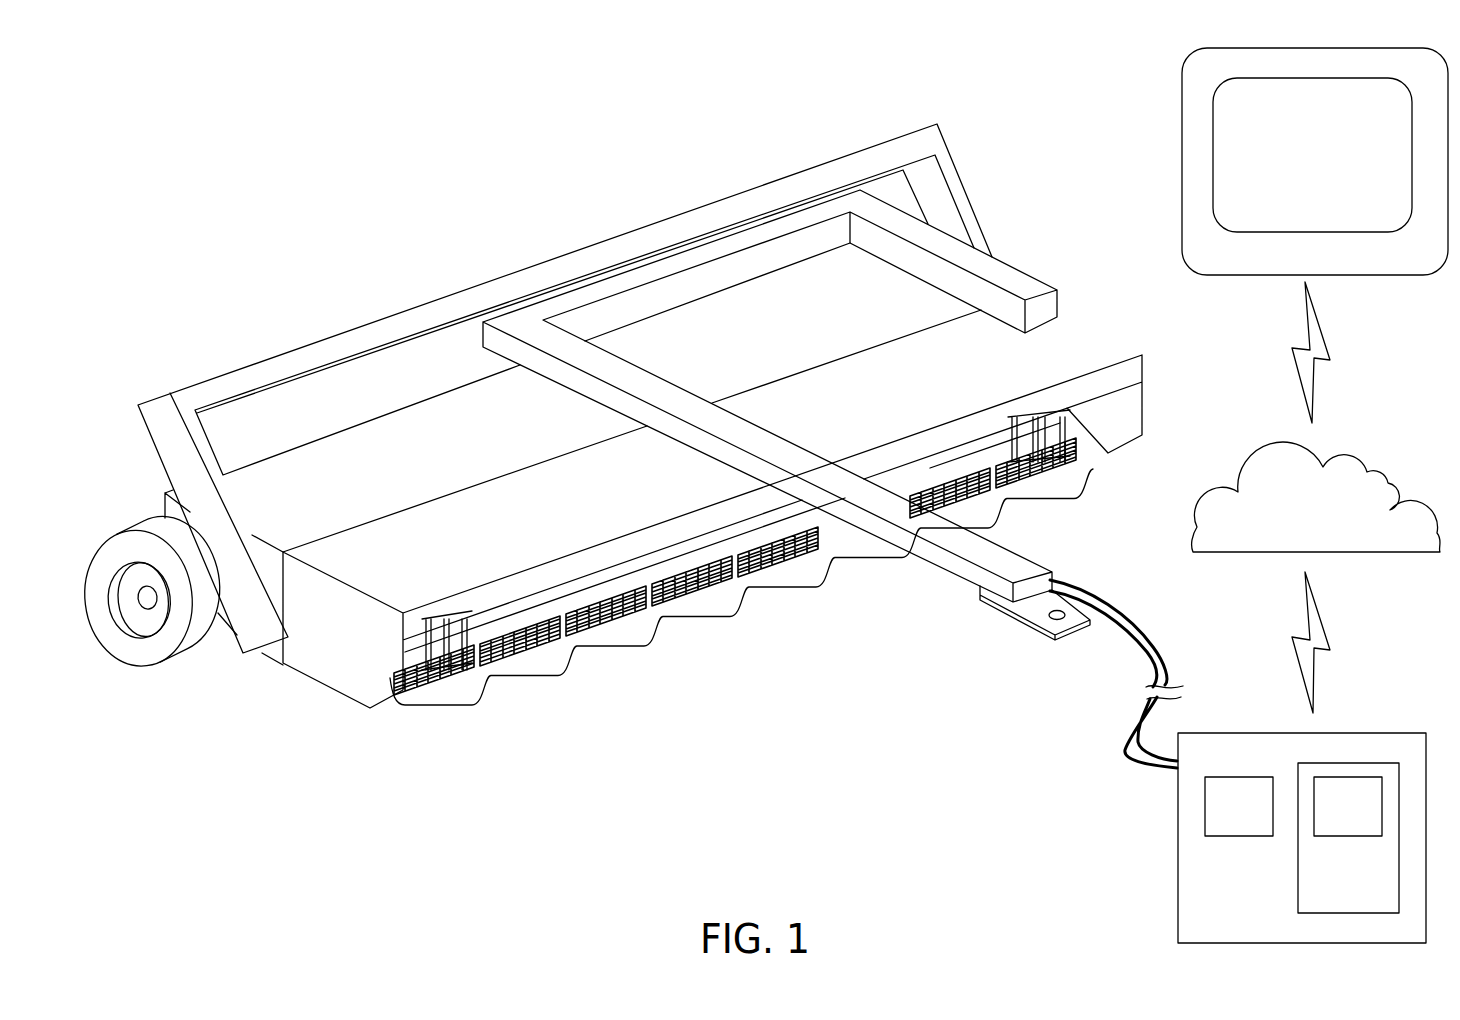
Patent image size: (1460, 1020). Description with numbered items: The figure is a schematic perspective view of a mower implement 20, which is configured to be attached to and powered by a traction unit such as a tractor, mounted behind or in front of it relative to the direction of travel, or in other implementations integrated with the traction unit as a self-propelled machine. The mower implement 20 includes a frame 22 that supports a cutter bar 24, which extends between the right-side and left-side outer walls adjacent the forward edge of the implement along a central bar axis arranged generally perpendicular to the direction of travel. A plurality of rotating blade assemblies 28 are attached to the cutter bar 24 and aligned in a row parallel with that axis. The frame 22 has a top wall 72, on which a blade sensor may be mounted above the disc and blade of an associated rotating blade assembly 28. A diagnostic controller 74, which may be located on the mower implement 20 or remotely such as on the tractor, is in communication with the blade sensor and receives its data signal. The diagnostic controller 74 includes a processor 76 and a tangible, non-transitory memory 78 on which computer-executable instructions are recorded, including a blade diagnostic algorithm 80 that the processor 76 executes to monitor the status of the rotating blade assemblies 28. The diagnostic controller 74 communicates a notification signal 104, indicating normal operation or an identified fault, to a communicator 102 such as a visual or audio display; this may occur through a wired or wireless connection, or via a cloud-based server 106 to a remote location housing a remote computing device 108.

The mower implement 20 is at (600, 105).
The frame 22 is at (1087, 323).
The cutter bar 24 is at (808, 598).
The rotating blade assemblies 28 is at (440, 678).
The top wall 72 is at (415, 580).
The diagnostic controller 74 is at (1252, 904).
The processor 76 is at (1257, 820).
The memory 78 is at (1365, 889).
The blade diagnostic algorithm 80 is at (1367, 820).
The communicator 102 is at (1336, 167).
The notification signal 104 is at (1330, 359).
The cloud-based server 106 is at (1330, 524).
The remote computing device 108 is at (1334, 265).